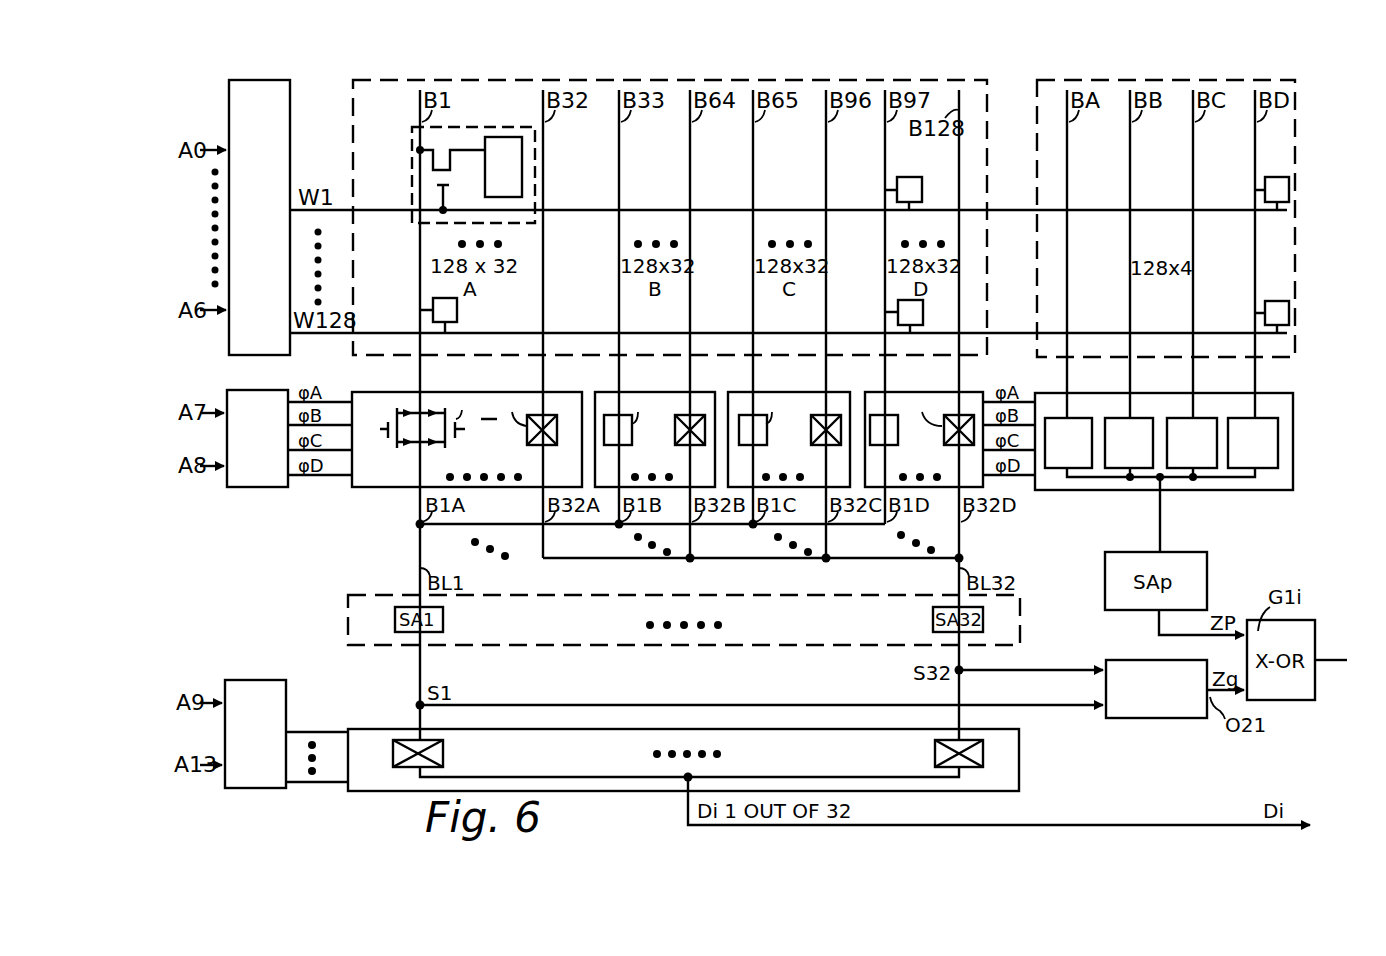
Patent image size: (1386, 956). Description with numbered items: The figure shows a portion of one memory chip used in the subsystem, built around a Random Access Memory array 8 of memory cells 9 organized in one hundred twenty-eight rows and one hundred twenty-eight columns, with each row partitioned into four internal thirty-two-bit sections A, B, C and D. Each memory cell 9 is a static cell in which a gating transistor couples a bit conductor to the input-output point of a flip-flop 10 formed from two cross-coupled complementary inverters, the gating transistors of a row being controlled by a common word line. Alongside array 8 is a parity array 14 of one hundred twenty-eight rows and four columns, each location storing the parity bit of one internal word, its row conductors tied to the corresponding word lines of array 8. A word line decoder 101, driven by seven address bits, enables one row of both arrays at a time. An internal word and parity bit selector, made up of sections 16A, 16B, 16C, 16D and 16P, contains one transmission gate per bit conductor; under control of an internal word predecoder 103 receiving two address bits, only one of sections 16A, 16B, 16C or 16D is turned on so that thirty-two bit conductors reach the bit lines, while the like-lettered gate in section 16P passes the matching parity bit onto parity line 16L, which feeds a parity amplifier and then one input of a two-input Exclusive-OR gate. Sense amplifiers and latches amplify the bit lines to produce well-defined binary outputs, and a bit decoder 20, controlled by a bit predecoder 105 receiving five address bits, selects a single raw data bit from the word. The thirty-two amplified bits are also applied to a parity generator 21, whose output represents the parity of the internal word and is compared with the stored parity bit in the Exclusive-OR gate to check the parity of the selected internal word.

The word line decoder 101 is at (229, 115).
The Random Access Memory (RAM) array 8 is at (355, 114).
The memory cell 9 is at (489, 127).
The flip-flop 10 is at (503, 167).
The parity array 14 is at (1295, 125).
The internal word predecoder 103 is at (257, 438).
The selector section 16A is at (467, 438).
The selector section 16B is at (655, 438).
The selector section 16C is at (789, 438).
The selector section 16D is at (924, 438).
The internal word parity selector section 16P is at (1293, 450).
The parity line 16L is at (1160, 540).
The bit predecoder 105 is at (255, 734).
The bit decoder 20 is at (392, 793).
The parity generator 21 is at (1152, 718).